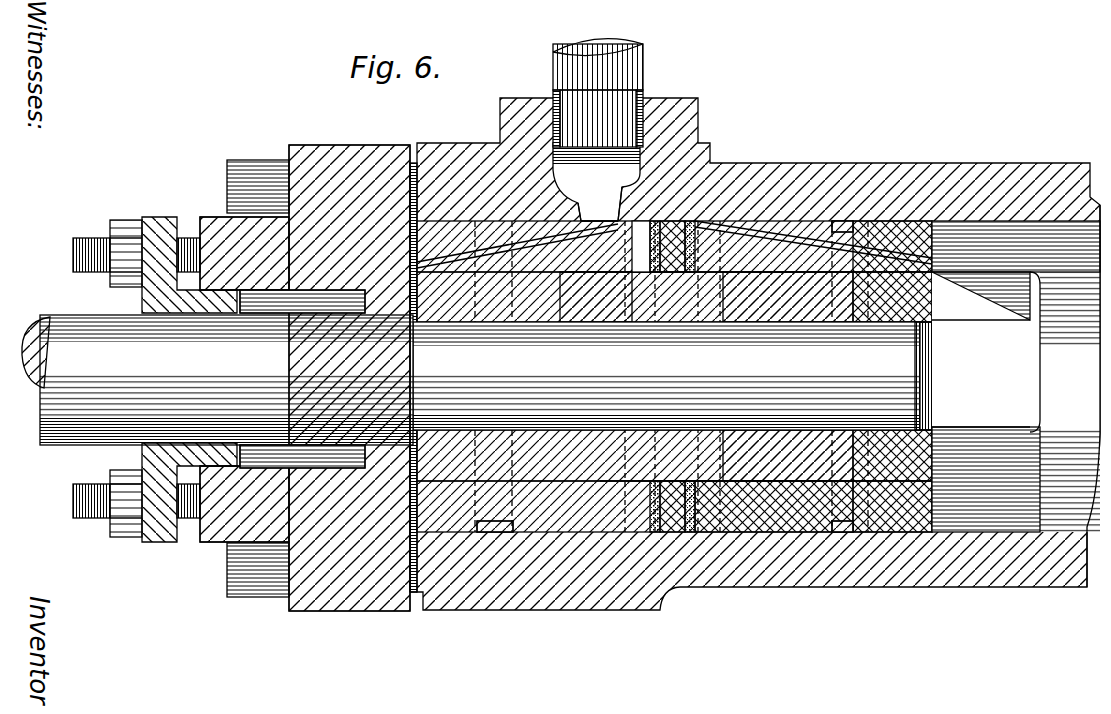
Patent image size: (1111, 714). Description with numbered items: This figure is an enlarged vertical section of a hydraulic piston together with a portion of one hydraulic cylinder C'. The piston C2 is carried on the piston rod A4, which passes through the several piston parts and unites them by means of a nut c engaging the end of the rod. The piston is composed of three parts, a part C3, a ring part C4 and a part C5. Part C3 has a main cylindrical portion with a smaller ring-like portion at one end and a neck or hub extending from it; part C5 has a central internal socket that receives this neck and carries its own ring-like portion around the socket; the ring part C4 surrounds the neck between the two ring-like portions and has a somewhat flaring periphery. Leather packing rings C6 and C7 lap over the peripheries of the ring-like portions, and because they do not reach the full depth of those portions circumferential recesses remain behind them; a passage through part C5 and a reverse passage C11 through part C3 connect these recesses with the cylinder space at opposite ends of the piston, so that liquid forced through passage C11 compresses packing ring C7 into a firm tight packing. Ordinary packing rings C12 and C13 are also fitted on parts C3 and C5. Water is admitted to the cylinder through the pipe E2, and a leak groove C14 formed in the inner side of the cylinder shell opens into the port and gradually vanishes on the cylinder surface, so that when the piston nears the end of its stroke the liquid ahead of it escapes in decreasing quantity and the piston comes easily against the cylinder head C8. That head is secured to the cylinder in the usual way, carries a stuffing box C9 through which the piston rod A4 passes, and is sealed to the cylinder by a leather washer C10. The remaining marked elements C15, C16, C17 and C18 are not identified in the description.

The hydraulic cylinder C' is at (758, 354).
The pipe E2 is at (598, 93).
The piston part C3 is at (652, 376).
The packing ring C7 is at (639, 228).
The lower ring C15 is at (774, 506).
The piston part C5 is at (788, 360).
The packing ring C6 is at (706, 224).
The cylinder head C8 is at (722, 229).
The packing ring C12 is at (845, 533).
The packing ring C13 is at (497, 533).
The groove C14 is at (613, 373).
The stuffing box C9 is at (599, 217).
The passage C11 is at (517, 255).
The leather washer C10 is at (813, 242).
The piston C2 is at (596, 297).
The nut c is at (1016, 396).
The piston rod A4 is at (217, 380).
The piston ring part C4 is at (302, 379).
The gland bolt C16 is at (203, 223).
The gland bolt C18 is at (340, 613).
The joint gasket C17 is at (407, 598).